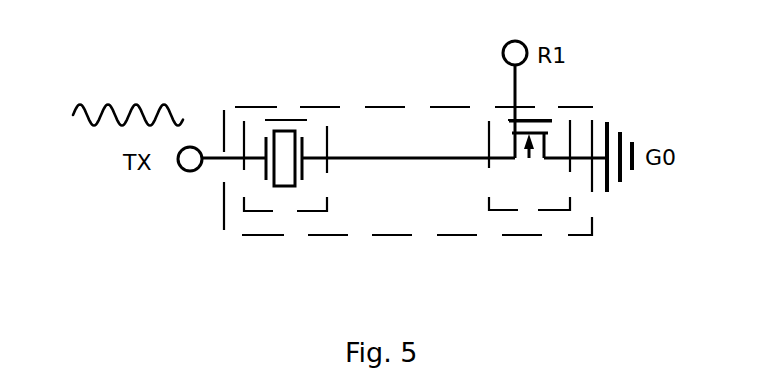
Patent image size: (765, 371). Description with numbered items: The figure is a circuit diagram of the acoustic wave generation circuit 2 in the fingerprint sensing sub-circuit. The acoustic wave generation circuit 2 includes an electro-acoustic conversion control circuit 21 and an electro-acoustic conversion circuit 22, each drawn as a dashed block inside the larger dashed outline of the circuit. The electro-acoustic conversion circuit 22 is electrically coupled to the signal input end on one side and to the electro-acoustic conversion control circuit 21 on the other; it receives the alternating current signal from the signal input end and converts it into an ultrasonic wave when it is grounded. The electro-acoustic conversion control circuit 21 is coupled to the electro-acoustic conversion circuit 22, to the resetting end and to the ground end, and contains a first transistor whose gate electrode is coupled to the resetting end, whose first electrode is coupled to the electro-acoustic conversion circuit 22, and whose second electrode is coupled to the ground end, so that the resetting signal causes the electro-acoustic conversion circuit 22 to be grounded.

The acoustic wave generation circuit 2 is at (553, 237).
The electro-acoustic conversion control circuit 21 is at (570, 120).
The electro-acoustic conversion circuit 22 is at (302, 122).